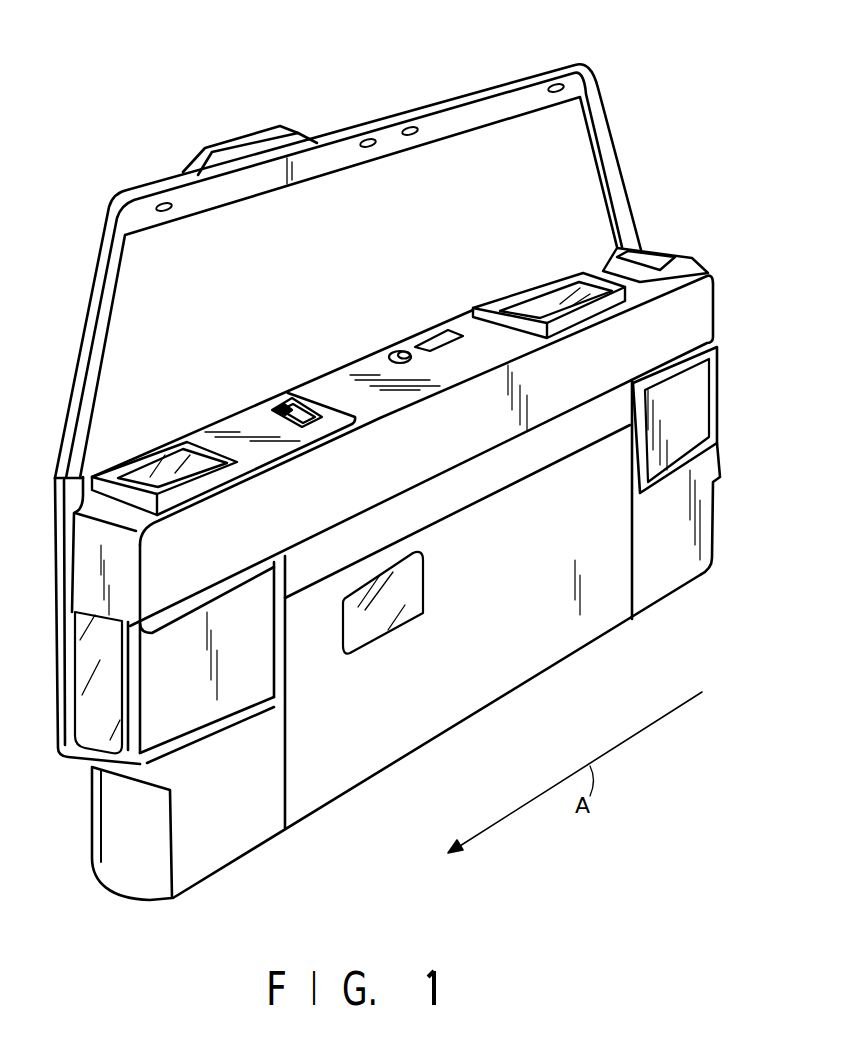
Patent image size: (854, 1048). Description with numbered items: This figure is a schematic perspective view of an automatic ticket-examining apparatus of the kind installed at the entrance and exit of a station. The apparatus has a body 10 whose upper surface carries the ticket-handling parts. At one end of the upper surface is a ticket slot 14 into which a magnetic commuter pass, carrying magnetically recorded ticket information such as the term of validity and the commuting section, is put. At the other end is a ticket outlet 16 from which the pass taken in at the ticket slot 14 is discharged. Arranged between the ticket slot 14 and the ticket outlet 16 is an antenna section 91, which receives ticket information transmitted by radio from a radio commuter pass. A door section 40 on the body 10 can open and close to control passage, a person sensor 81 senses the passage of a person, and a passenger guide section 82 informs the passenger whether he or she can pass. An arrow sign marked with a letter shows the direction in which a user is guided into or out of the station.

The body 10 is at (533, 635).
The ticket slot 14 is at (653, 258).
The ticket outlet 16 is at (290, 405).
The door section 40 is at (207, 700).
The person sensor 81 is at (163, 203).
The passenger guide section 82 is at (180, 460).
The antenna section 91 is at (528, 303).